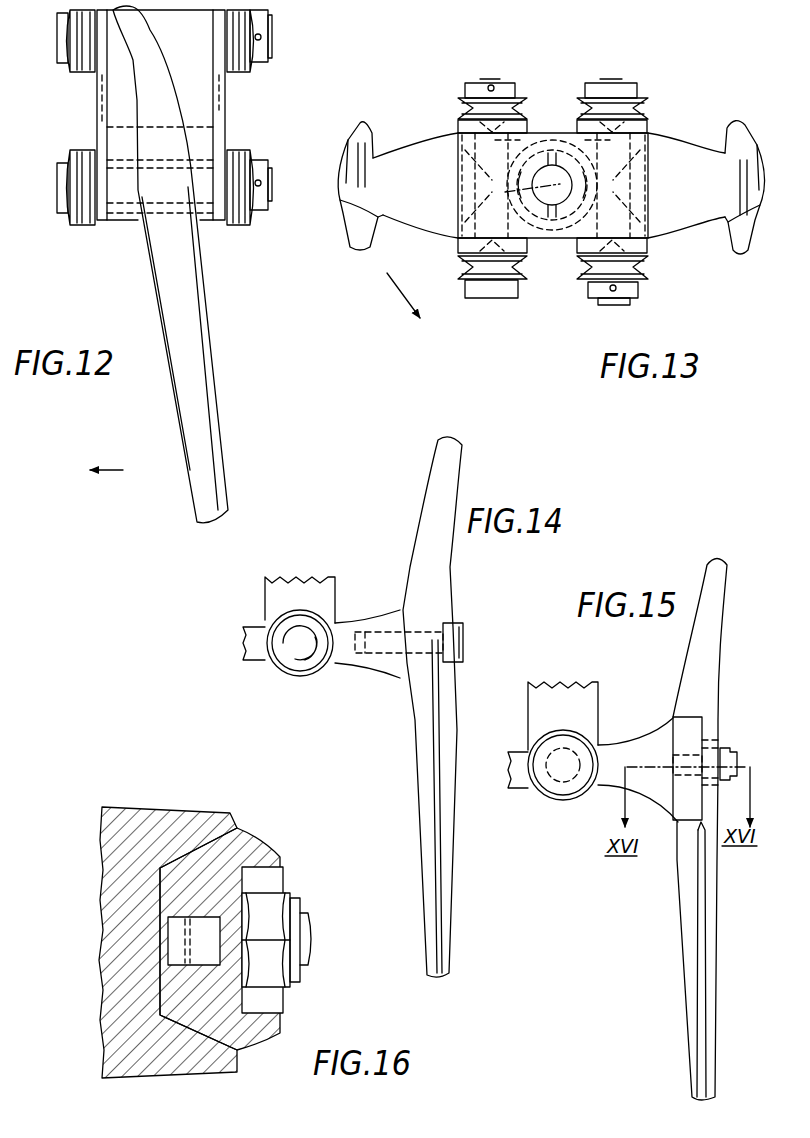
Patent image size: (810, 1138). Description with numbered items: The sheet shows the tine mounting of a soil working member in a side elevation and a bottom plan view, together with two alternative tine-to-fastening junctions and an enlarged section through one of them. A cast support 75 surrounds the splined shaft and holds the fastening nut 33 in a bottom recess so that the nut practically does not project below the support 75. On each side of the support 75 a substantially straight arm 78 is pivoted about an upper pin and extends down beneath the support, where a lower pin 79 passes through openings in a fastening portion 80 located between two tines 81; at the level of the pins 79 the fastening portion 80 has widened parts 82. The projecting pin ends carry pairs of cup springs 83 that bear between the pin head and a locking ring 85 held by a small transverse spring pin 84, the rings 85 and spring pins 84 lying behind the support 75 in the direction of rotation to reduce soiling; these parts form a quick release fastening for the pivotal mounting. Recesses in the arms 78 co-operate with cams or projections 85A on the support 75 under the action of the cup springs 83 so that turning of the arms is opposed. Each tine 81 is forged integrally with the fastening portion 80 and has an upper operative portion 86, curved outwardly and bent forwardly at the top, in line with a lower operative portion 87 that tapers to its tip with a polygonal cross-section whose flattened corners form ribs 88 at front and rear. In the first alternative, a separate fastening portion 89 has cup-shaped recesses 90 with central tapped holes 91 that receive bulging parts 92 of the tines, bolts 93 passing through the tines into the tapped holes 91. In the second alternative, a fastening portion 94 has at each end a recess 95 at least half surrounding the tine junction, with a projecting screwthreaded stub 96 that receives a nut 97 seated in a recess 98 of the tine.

In FIG. 13, the fastening nut 33 is at (590, 183).
In FIG. 12, the support 75 is at (185, 120).
In FIG. 12, the arm 78 is at (97, 80).
In FIG. 13, the arm 78 is at (458, 127).
In FIG. 14, the arm 78 is at (320, 577).
In FIG. 15, the arm 78 is at (580, 690).
In FIG. 12, the pin 79 is at (272, 42).
In FIG. 13, the pin 79 is at (489, 83).
In FIG. 14, the pin 79 is at (300, 678).
In FIG. 15, the pin 79 is at (569, 785).
In FIG. 14, the fastening portion 80 is at (243, 645).
In FIG. 15, the fastening portion 80 is at (525, 750).
In FIG. 12, the tine 81 is at (213, 322).
In FIG. 14, the tine 81 is at (415, 742).
In FIG. 15, the tine 81 is at (680, 905).
In FIG. 12, the widened part 82 is at (130, 217).
In FIG. 13, the widened part 82 is at (557, 240).
In FIG. 12, the cup spring 83 is at (75, 64).
In FIG. 13, the cup spring 83 is at (560, 108).
In FIG. 14, the cup spring 83 is at (280, 684).
In FIG. 15, the cup spring 83 is at (551, 798).
In FIG. 13, the spring pin 84 is at (505, 83).
In FIG. 12, the locking ring 85 is at (260, 70).
In FIG. 13, the locking ring 85 is at (465, 88).
In FIG. 12, the cam or projection 85A is at (97, 112).
In FIG. 13, the cam or projection 85A is at (556, 185).
In FIG. 12, the upper operative portion 86 is at (152, 37).
In FIG. 13, the upper operative portion 86 is at (352, 248).
In FIG. 14, the upper operative portion 86 is at (437, 458).
In FIG. 15, the upper operative portion 86 is at (712, 655).
In FIG. 12, the lower operative portion 87 is at (203, 396).
In FIG. 13, the lower operative portion 87 is at (352, 140).
In FIG. 14, the lower operative portion 87 is at (424, 876).
In FIG. 15, the lower operative portion 87 is at (684, 965).
In FIG. 12, the rib 88 is at (173, 412).
In FIG. 13, the rib 88 is at (372, 130).
In FIG. 14, the rib 88 is at (437, 812).
In FIG. 15, the rib 88 is at (697, 1030).
In FIG. 14, the fastening portion 89 is at (348, 622).
In FIG. 14, the cup-shaped recess 90 is at (390, 670).
In FIG. 14, the tapped hole 91 is at (358, 652).
In FIG. 14, the bulging part 92 is at (404, 612).
In FIG. 14, the bolt 93 is at (463, 633).
In FIG. 15, the fastening portion 94 is at (640, 745).
In FIG. 16, the fastening portion 94 is at (162, 808).
In FIG. 15, the recess 95 is at (668, 808).
In FIG. 16, the recess 95 is at (235, 826).
In FIG. 15, the screwthreaded stub 96 is at (735, 760).
In FIG. 16, the screwthreaded stub 96 is at (315, 937).
In FIG. 16, the nut 97 is at (292, 902).
In FIG. 16, the recess 98 is at (273, 1003).